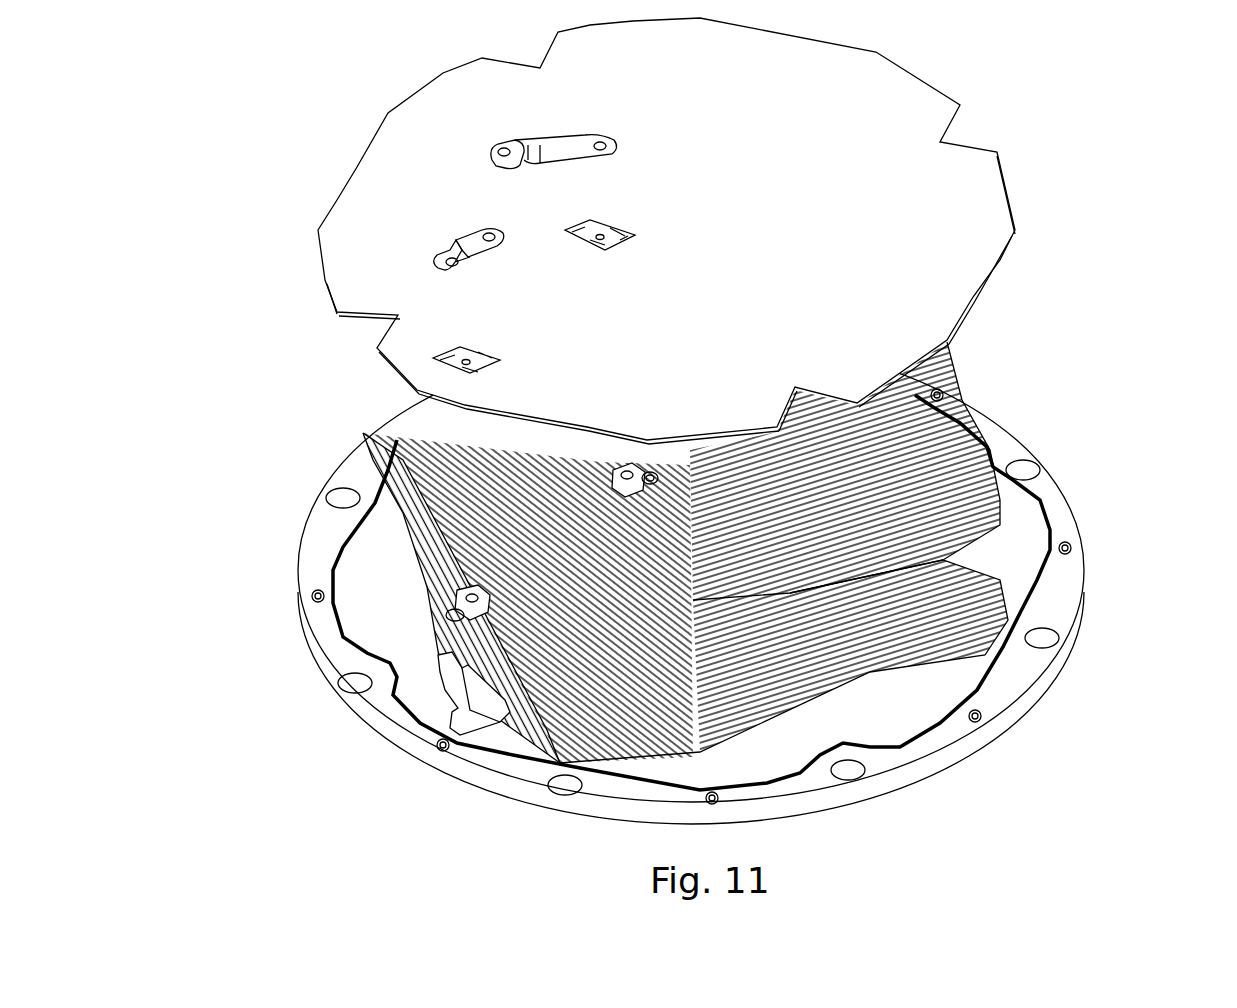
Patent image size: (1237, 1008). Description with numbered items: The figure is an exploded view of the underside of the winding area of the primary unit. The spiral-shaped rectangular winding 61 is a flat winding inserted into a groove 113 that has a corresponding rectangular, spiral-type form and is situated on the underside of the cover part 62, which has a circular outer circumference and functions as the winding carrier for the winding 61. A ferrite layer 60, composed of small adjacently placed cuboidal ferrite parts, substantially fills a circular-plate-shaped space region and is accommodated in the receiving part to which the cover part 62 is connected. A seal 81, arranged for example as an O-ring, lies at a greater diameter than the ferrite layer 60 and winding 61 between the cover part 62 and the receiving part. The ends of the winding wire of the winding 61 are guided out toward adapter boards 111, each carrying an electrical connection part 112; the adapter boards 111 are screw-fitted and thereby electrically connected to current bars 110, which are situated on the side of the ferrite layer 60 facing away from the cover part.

The ferrite layer 60 is at (935, 193).
The winding 61 is at (995, 510).
The cover part 62 is at (1022, 662).
The seal 81 is at (928, 725).
The current bars 110 is at (453, 240).
The adapter boards 111 is at (458, 604).
The electrical connection part 112 is at (475, 610).
The groove 113 is at (540, 710).